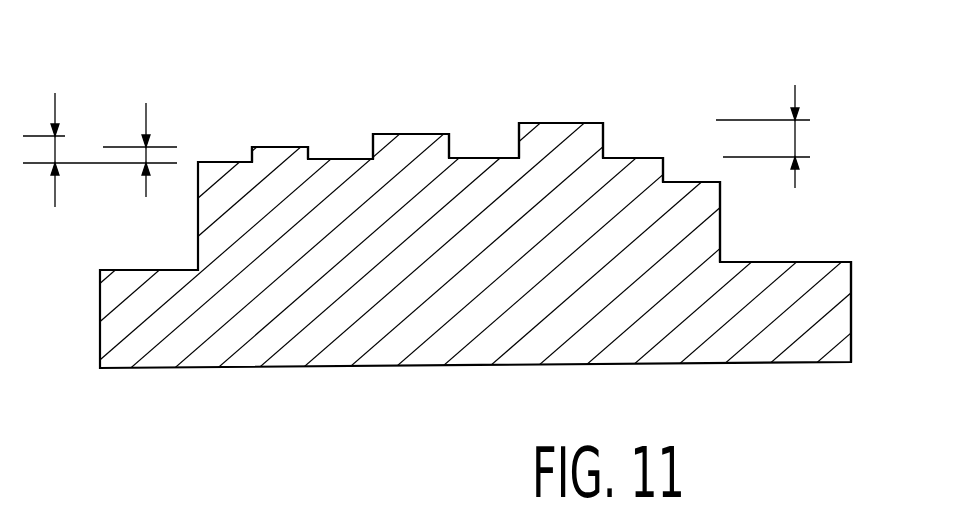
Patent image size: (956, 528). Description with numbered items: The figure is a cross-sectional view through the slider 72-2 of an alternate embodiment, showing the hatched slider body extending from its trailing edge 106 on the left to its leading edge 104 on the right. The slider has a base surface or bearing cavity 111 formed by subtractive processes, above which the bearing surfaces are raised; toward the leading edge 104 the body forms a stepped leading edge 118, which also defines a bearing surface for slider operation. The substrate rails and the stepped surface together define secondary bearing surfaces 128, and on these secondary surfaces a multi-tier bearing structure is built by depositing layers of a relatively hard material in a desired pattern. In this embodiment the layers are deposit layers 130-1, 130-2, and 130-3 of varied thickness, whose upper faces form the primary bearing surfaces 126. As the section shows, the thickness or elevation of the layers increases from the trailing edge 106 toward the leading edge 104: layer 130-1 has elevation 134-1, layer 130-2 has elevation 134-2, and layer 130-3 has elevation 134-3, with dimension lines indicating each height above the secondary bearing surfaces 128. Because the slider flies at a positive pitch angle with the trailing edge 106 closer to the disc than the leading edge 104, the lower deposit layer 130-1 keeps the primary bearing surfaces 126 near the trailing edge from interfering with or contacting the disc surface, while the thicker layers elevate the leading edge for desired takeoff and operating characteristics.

The slider 72-2 is at (662, 117).
The leading edge 104 is at (852, 263).
The trailing edge 106 is at (99, 297).
The bearing cavity 111 is at (133, 268).
The stepped leading edge 118 is at (698, 187).
The primary bearing surfaces 126 is at (296, 146).
The secondary bearing surfaces 128 is at (216, 161).
The deposit layer 130-1 is at (272, 146).
The deposit layer 130-2 is at (422, 128).
The deposit layer 130-3 is at (555, 122).
The elevation of layer 130-1 134-1 is at (146, 104).
The elevation of layer 130-2 134-2 is at (55, 108).
The elevation of layer 130-3 134-3 is at (795, 92).